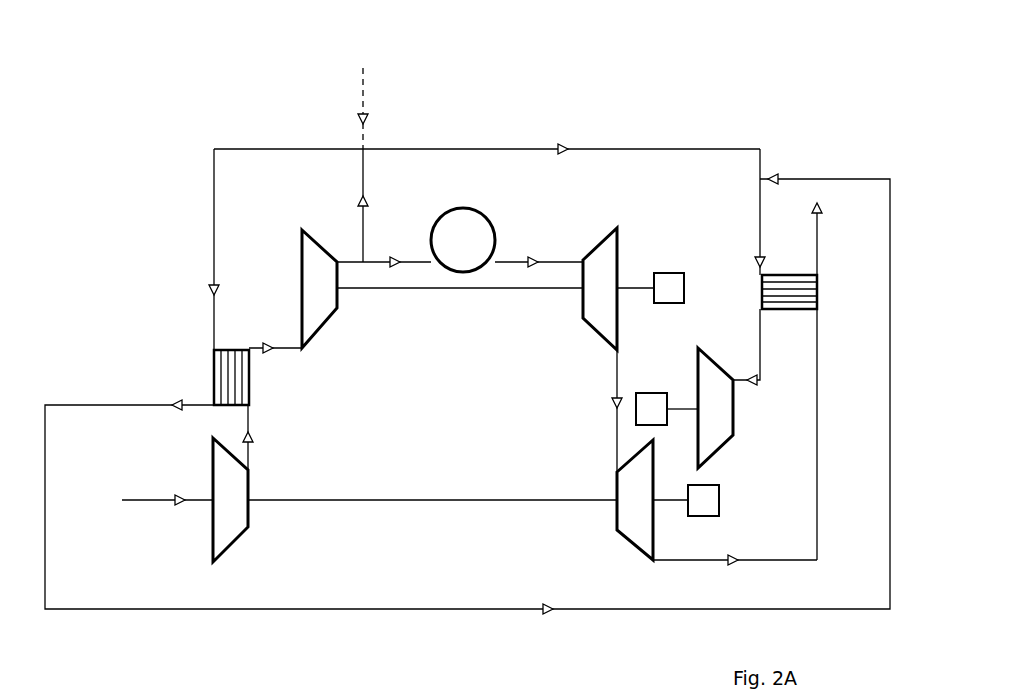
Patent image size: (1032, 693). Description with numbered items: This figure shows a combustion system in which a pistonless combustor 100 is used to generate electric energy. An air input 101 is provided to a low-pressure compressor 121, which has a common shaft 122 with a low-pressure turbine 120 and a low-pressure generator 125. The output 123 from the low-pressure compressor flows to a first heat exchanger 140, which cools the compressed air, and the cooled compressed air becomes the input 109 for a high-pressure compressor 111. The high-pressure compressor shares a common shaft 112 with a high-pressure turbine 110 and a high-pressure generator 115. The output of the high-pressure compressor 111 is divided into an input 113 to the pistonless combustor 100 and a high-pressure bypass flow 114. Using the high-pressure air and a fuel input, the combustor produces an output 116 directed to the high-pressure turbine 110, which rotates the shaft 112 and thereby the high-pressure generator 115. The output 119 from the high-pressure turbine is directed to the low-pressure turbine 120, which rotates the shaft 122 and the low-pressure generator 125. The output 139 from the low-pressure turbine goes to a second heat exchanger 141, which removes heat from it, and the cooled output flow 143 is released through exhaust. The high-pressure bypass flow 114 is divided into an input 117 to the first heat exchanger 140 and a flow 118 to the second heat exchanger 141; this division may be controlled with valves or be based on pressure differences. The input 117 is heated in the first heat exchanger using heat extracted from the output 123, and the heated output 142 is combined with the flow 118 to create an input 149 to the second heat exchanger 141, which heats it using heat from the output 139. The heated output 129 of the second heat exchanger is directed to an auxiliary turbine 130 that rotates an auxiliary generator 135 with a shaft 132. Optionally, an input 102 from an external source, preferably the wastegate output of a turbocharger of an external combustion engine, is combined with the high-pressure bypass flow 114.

The pistonless combustor 100 is at (466, 208).
The air input 101 is at (175, 500).
The input from an external source 102 is at (363, 68).
The input for high-pressure compressor 109 is at (290, 350).
The high-pressure turbine 110 is at (622, 245).
The high-pressure compressor 111 is at (337, 308).
The shaft 112 is at (445, 288).
The input to the pistonless combustor 113 is at (380, 262).
The high-pressure bypass flow 114 is at (358, 226).
The high-pressure generator 115 is at (683, 273).
The output of pistonless combustor 116 is at (553, 261).
The input to the first heat exchanger 117 is at (285, 149).
The flow to the second heat exchanger 118 is at (650, 149).
The output from the high-pressure turbine 119 is at (617, 437).
The low-pressure turbine 120 is at (617, 519).
The low-pressure compressor 121 is at (250, 520).
The shaft 122 is at (375, 500).
The output from the low-pressure compressor 123 is at (250, 420).
The low-pressure generator 125 is at (720, 516).
The heated output of the second heat exchanger 129 is at (760, 335).
The auxiliary turbine 130 is at (735, 410).
The shaft 132 is at (687, 409).
The auxiliary generator 135 is at (647, 393).
The output from the low-pressure turbine 139 is at (817, 425).
The first heat exchanger 140 is at (214, 355).
The second heat exchanger 141 is at (817, 293).
The heated output from the first heat exchanger 142 is at (130, 405).
The cooled output flow 143 is at (817, 240).
The input to the second heat exchanger 149 is at (760, 262).